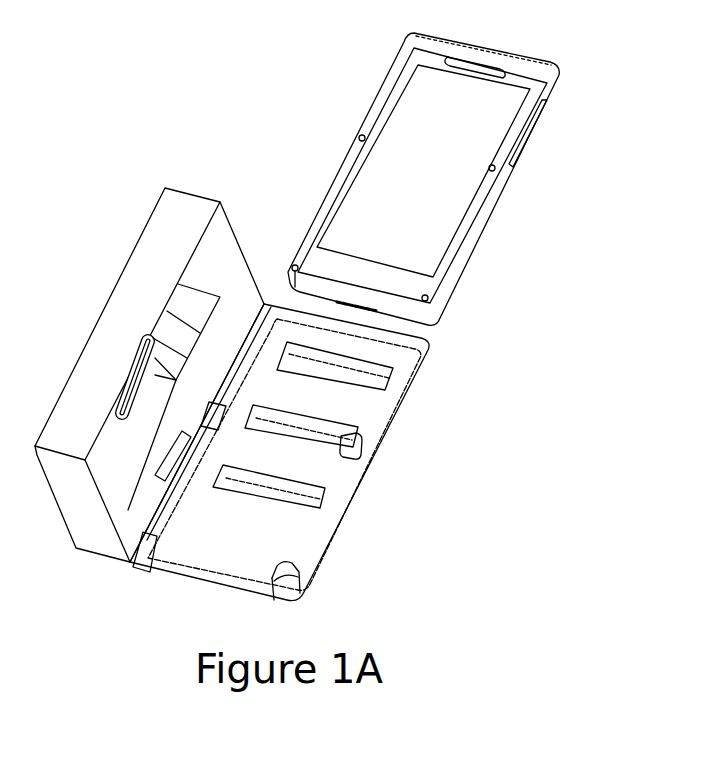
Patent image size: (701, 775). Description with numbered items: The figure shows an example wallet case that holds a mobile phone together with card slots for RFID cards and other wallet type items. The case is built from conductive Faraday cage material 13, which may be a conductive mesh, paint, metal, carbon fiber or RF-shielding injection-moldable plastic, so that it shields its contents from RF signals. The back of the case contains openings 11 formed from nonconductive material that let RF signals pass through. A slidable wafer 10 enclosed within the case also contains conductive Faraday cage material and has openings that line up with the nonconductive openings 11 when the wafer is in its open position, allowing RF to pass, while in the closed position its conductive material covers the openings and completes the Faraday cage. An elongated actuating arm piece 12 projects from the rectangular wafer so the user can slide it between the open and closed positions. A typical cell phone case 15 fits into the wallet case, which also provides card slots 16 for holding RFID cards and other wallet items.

The slidable wafer 10 is at (281, 502).
The openings 11 is at (303, 418).
The elongated actuating arm piece 12 is at (408, 408).
The conductive Faraday cage material 13 is at (173, 233).
The cell phone case 15 is at (423, 48).
The card slots 16 is at (197, 290).